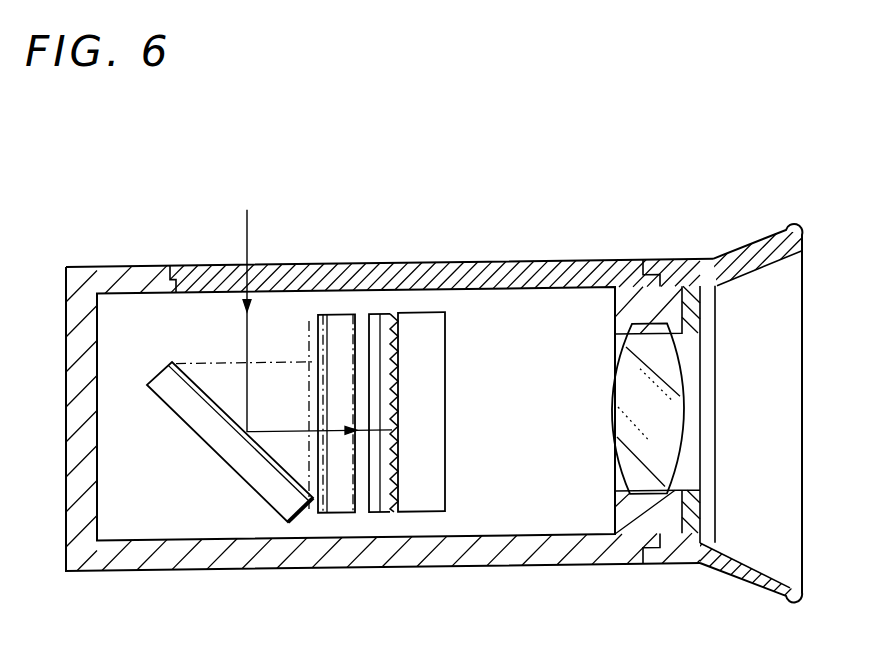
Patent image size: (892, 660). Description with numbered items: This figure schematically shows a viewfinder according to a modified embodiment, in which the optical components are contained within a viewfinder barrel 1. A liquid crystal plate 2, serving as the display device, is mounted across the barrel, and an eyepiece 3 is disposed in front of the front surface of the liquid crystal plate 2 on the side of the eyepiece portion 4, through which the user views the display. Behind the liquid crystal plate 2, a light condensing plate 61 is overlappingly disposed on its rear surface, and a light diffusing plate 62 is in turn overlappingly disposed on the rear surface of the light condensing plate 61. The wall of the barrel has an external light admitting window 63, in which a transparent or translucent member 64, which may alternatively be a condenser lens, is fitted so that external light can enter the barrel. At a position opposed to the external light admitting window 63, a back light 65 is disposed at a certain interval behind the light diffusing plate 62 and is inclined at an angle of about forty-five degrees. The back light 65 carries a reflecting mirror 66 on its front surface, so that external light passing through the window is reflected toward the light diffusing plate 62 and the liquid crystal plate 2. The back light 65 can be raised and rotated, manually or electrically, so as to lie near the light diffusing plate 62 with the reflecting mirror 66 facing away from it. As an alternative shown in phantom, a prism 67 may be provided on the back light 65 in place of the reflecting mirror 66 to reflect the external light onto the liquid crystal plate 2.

The viewfinder barrel 1 is at (557, 263).
The liquid crystal plate 2 is at (433, 414).
The eyepiece 3 is at (660, 395).
The eyepiece portion 4 is at (772, 241).
The light condensing plate 61 is at (392, 314).
The light diffusing plate 62 is at (375, 314).
The external light admitting window 63 is at (170, 267).
The transparent member 64 is at (222, 264).
The back light 65 is at (342, 323).
The reflecting mirror 66 is at (318, 337).
The prism 67 is at (195, 358).